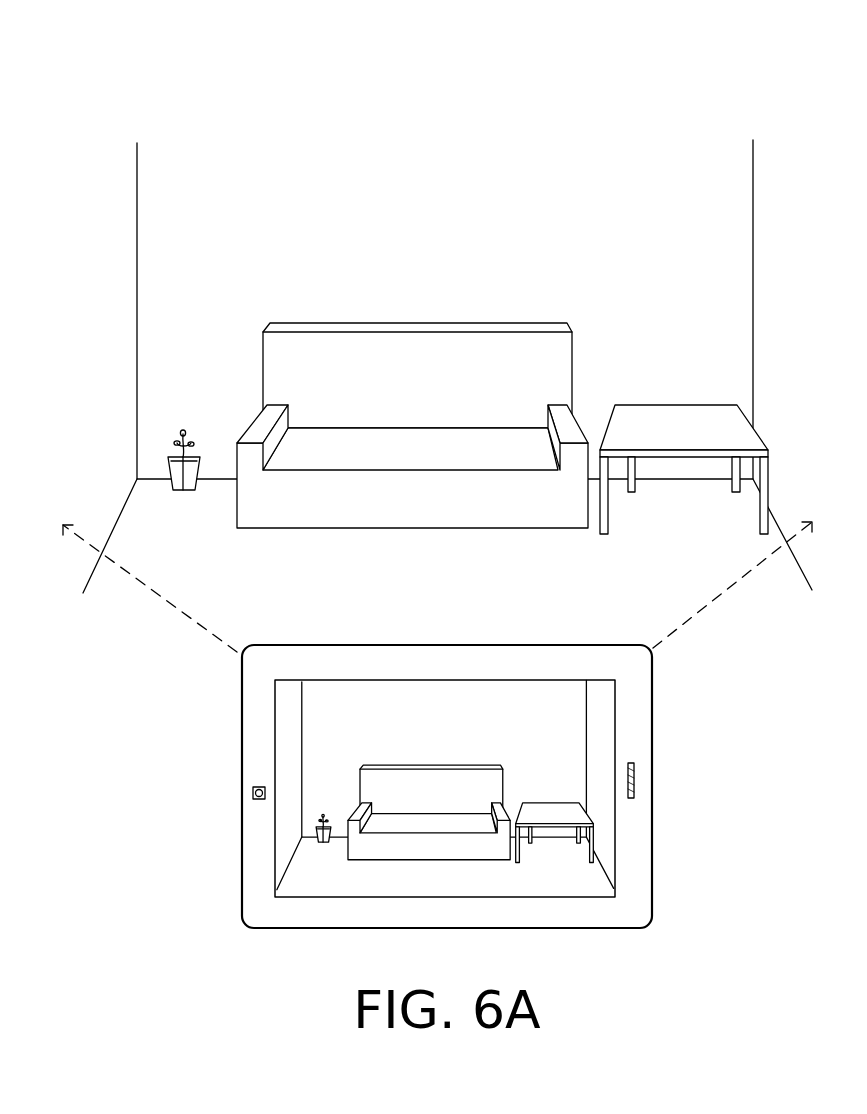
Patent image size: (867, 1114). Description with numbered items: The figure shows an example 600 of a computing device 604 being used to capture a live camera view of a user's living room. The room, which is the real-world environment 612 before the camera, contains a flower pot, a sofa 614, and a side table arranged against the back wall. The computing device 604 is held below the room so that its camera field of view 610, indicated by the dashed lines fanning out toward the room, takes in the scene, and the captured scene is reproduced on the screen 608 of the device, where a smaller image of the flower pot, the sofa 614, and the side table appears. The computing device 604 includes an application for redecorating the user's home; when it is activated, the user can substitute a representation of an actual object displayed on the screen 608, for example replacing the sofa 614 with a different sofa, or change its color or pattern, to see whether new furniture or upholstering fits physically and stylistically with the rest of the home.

The example 600 is at (778, 102).
The computing device 604 is at (653, 760).
The screen 608 is at (615, 893).
The camera field of view 610 is at (217, 635).
The real-world room 612 is at (90, 200).
The sofa 614 is at (383, 323).